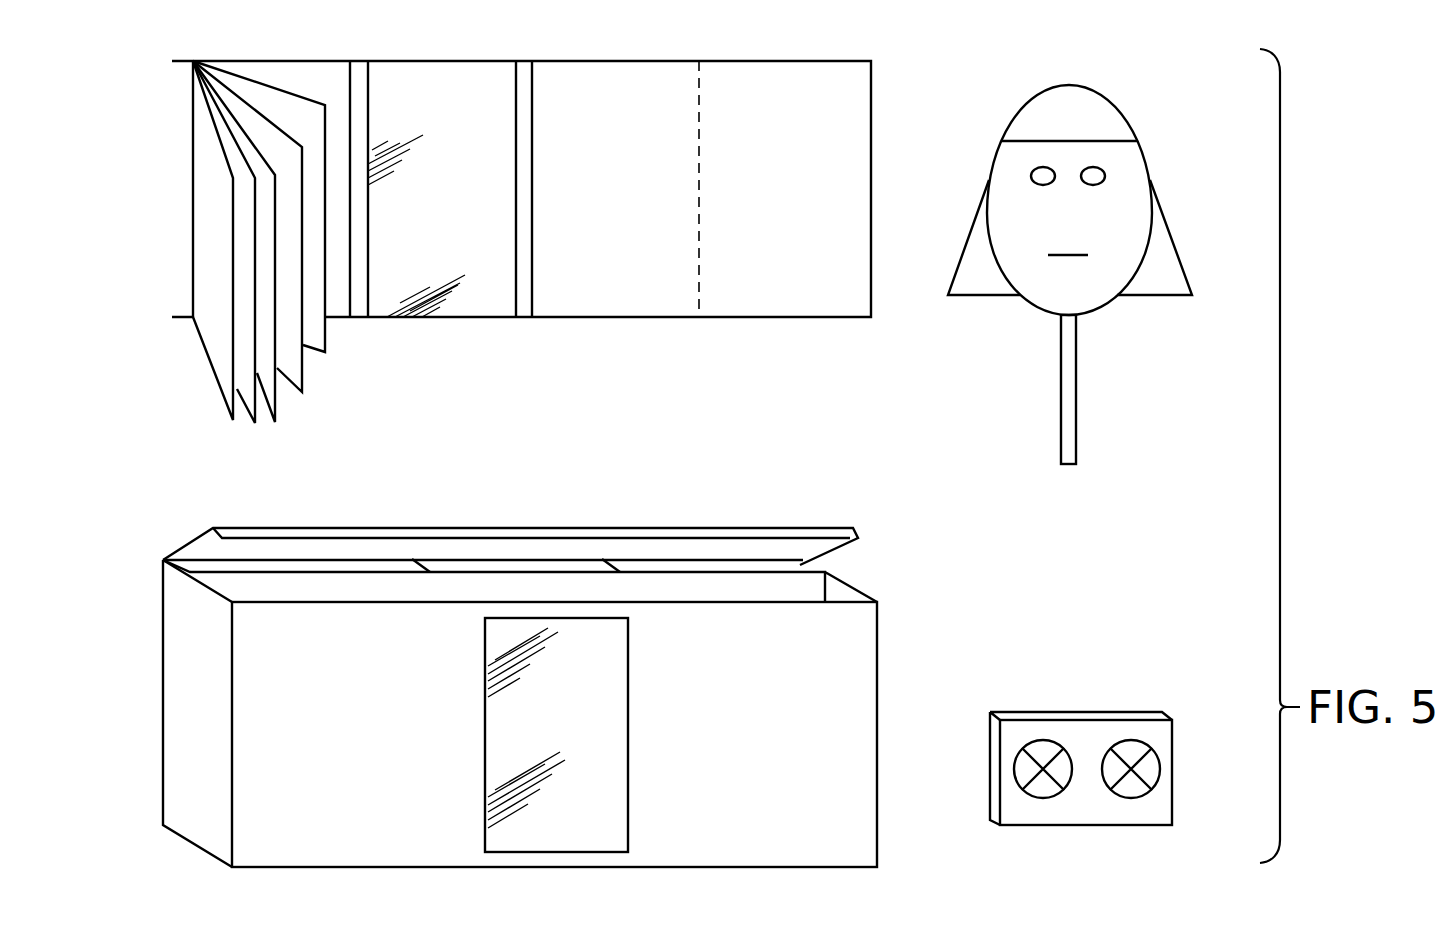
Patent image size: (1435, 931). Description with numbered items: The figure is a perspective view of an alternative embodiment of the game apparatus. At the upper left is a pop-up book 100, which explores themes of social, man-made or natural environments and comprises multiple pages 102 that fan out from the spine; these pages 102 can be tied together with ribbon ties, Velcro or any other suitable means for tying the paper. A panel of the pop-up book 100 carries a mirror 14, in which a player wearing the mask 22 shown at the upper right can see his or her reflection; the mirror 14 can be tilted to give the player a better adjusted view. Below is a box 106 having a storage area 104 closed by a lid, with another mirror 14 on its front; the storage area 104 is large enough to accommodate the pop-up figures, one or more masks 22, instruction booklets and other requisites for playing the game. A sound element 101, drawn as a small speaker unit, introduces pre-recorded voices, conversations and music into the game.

The pop-up book 100 is at (172, 112).
The pages 102 is at (210, 363).
The mirror 14 is at (455, 317).
The mask 22 is at (1160, 183).
The storage area 104 is at (800, 565).
The box 106 is at (848, 668).
The sound element 101 is at (1085, 727).